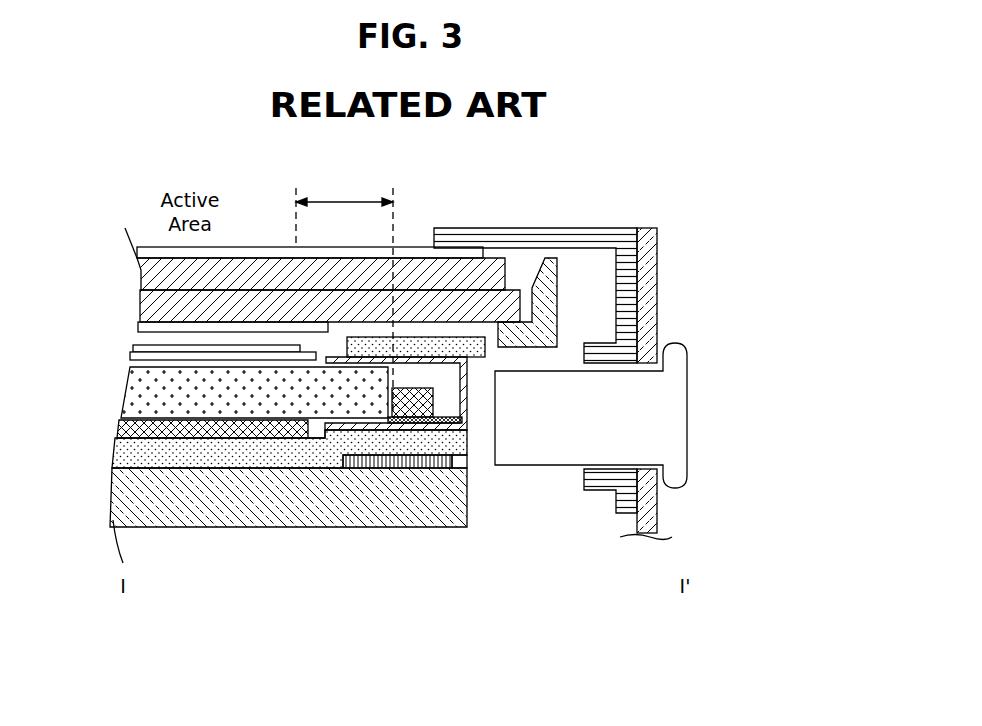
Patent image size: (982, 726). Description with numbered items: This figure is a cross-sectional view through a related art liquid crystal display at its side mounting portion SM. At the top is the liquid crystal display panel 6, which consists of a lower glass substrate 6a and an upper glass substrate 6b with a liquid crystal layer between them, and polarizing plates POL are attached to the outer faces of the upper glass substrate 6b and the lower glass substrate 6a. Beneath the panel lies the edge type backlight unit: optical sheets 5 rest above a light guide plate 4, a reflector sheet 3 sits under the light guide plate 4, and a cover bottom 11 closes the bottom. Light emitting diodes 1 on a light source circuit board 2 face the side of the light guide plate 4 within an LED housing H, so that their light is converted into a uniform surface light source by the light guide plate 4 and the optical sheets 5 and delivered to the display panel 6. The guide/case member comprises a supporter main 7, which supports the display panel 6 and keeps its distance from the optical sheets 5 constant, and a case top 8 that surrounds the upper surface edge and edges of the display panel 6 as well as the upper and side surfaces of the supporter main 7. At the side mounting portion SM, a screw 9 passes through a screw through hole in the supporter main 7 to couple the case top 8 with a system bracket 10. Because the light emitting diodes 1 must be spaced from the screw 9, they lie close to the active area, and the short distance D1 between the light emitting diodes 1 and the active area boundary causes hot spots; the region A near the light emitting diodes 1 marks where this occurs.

The polarizing plate POL is at (137, 255).
The liquid crystal display panel 6 is at (277, 290).
The lower glass substrate 6a is at (142, 306).
The upper glass substrate 6b is at (142, 273).
The optical sheets 5 is at (123, 345).
The light guide plate 4 is at (137, 393).
The reflector sheet 3 is at (118, 427).
The cover bottom 11 is at (115, 452).
The supporter main 7 is at (118, 497).
The case top 8 is at (600, 240).
The system bracket 10 is at (647, 235).
The screw 9 is at (673, 427).
The side mounting portion SM is at (695, 324).
The light emitting diode 1 is at (425, 418).
The light source circuit board 2 is at (397, 456).
The area A is at (359, 468).
The LED housing H is at (462, 430).
The distance between the LEDs and the active area boundary D1 is at (344, 298).